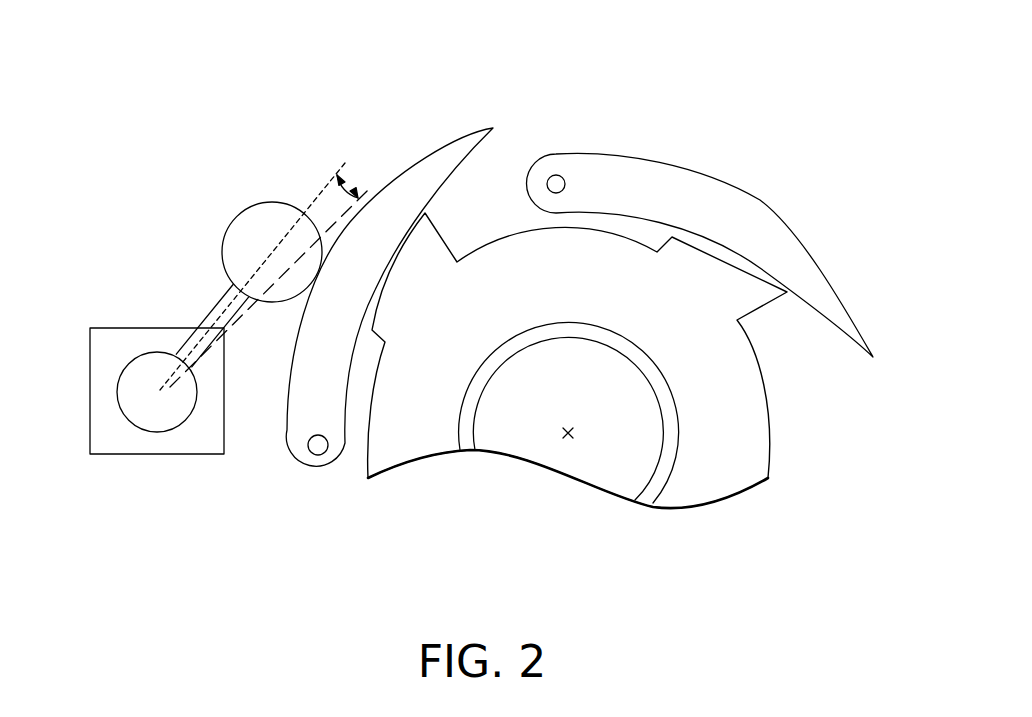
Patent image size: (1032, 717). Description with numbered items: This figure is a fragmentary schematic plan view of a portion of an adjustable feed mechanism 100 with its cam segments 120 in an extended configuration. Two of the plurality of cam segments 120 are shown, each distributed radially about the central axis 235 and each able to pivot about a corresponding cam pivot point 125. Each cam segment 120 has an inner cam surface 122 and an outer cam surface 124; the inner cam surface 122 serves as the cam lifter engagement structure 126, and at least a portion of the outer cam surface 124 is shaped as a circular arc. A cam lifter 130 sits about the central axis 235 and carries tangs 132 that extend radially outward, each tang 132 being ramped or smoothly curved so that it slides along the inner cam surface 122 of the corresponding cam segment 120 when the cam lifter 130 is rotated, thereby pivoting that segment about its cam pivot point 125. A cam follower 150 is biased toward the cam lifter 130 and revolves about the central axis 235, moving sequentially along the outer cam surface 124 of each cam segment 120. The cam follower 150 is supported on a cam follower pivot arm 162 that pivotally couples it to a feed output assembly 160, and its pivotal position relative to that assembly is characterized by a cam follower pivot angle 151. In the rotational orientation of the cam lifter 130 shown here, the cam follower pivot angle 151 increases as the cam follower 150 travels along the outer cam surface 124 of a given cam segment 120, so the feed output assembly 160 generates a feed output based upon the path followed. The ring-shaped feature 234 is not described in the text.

The adjustable feed mechanism 100 is at (220, 66).
The cam segment 120 is at (412, 161).
The inner cam surface 122 is at (466, 163).
The outer cam surface 124 is at (452, 138).
The cam pivot point 125 is at (308, 446).
The cam lifter engagement structure 126 is at (438, 188).
The cam lifter 130 is at (775, 430).
The tang 132 is at (375, 337).
The cam follower 150 is at (262, 203).
The cam follower pivot angle 151 is at (359, 197).
The feed output assembly 160 is at (133, 328).
The cam follower pivot arm 162 is at (208, 305).
The ring 234 is at (614, 350).
The central axis 235 is at (572, 433).